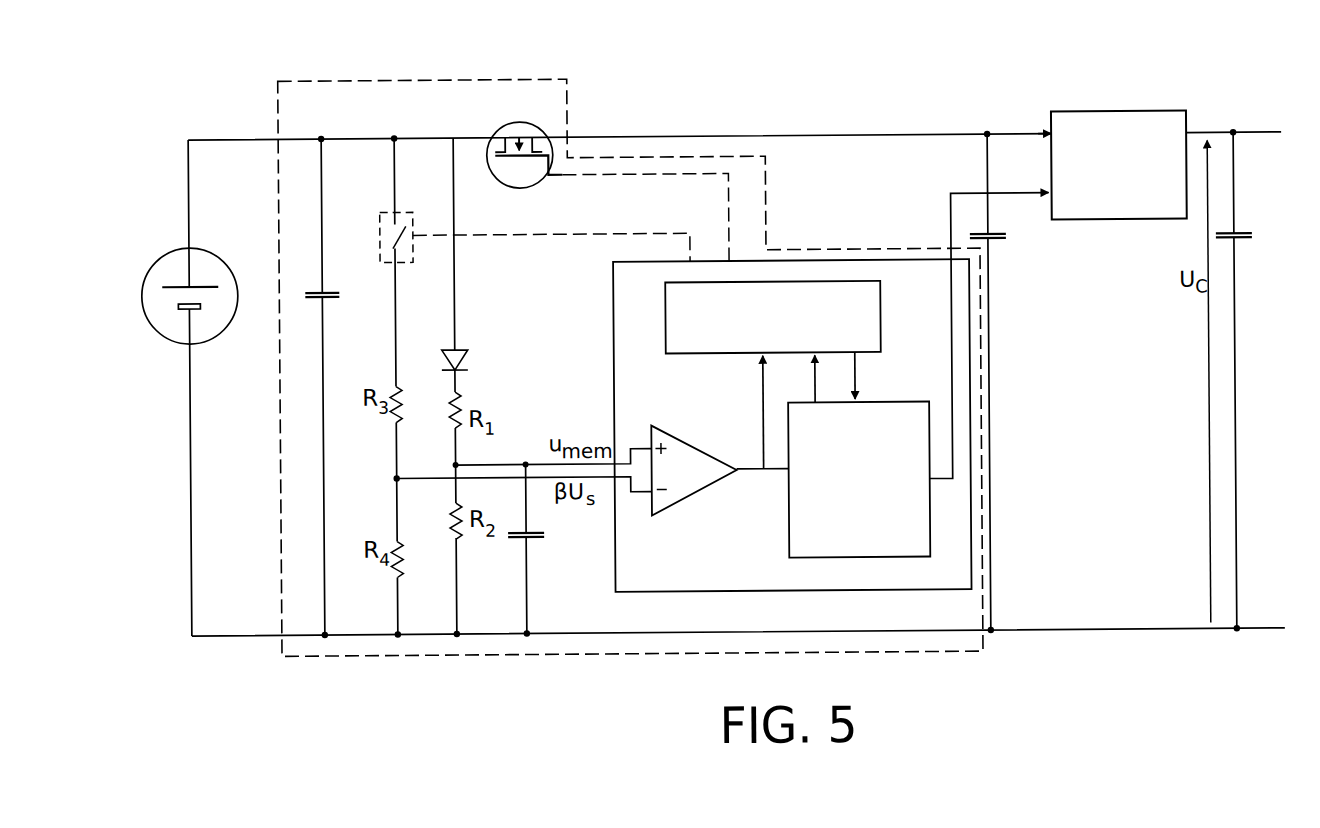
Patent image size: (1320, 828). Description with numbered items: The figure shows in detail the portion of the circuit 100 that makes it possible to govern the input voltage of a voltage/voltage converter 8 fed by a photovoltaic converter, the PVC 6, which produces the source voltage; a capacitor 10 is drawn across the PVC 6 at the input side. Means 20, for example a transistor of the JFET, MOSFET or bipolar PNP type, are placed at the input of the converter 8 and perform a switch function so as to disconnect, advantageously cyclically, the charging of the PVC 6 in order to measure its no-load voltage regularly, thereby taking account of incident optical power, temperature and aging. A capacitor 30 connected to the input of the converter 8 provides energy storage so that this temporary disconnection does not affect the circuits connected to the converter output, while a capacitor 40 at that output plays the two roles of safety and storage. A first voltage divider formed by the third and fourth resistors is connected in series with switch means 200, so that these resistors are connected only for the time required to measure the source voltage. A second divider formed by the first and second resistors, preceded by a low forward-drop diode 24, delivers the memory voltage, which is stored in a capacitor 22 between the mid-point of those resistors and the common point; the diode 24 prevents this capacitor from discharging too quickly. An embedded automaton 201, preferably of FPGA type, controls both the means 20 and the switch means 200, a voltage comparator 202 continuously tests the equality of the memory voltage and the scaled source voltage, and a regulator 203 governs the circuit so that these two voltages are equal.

The battery charging control device 100 is at (414, 78).
The PVC (photovoltaic converter) 6 is at (163, 254).
The input capacitor 10 is at (314, 278).
The switch means 200 is at (382, 242).
The means (transistor) 20 is at (496, 131).
The diode 24 is at (478, 362).
The capacitor 22 is at (532, 539).
The automaton 201 is at (717, 353).
The voltage comparator 202 is at (677, 438).
The regulator 203 is at (883, 402).
The capacitor 30 is at (998, 244).
The voltage/voltage converter 8 is at (1072, 224).
The capacitor 40 is at (1247, 244).